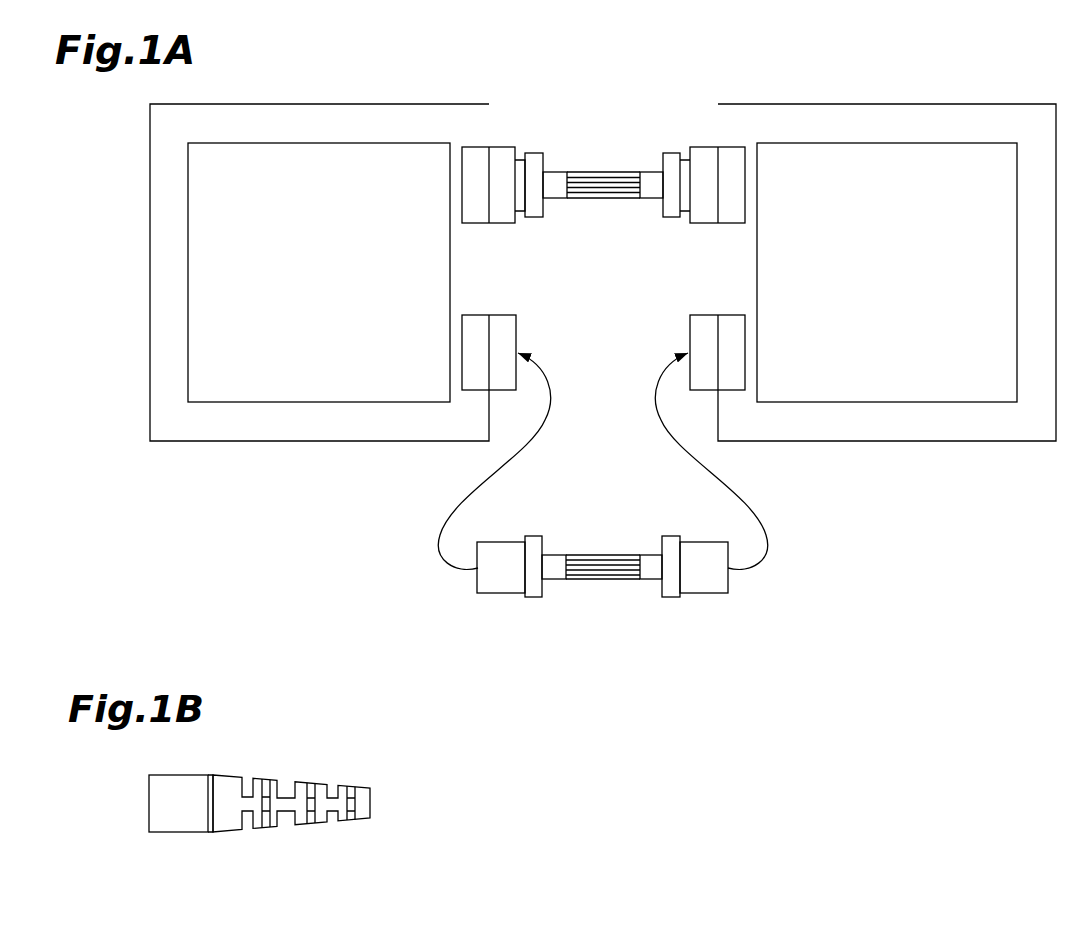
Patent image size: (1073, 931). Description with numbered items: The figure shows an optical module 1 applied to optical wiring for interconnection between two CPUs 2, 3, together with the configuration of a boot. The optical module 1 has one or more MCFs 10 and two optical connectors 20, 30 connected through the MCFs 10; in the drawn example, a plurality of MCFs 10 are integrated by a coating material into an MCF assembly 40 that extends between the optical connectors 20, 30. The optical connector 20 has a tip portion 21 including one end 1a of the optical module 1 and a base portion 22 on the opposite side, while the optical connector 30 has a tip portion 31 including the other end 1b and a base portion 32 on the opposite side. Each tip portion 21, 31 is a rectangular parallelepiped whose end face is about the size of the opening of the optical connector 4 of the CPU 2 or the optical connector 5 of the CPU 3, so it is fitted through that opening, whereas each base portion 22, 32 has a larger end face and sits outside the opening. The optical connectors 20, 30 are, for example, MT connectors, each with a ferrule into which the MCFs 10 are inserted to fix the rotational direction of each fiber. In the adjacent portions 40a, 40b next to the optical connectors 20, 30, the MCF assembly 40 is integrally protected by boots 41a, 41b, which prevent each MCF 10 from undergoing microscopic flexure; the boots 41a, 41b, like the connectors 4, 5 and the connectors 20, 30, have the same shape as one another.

In FIG. 1A, the optical module 1 is at (612, 125).
In FIG. 1A, the one end of the optical module 1a is at (511, 604).
In FIG. 1A, the other end of the optical module 1b is at (702, 604).
In FIG. 1A, the CPU 2 is at (385, 104).
In FIG. 1A, the CPU 3 is at (983, 104).
In FIG. 1A, the optical connector of the CPU 4 is at (500, 147).
In FIG. 1A, the optical connector of the CPU 5 is at (703, 147).
In FIG. 1A, the MCF 10 is at (600, 580).
In FIG. 1A, the optical connector 20 is at (512, 622).
In FIG. 1A, the tip portion 21 is at (490, 593).
In FIG. 1A, the base portion 22 is at (537, 603).
In FIG. 1A, the optical connector 30 is at (702, 622).
In FIG. 1A, the tip portion 31 is at (724, 593).
In FIG. 1A, the base portion 32 is at (673, 597).
In FIG. 1A, the MCF assembly 40 is at (613, 555).
In FIG. 1A, the adjacent portion 40a is at (577, 527).
In FIG. 1A, the adjacent portion 40b is at (650, 541).
In FIG. 1A, the boot 41a is at (555, 555).
In FIG. 1B, the boot 41a is at (259, 781).
In FIG. 1A, the boot 41b is at (650, 555).
In FIG. 1B, the boot 41b is at (258, 778).